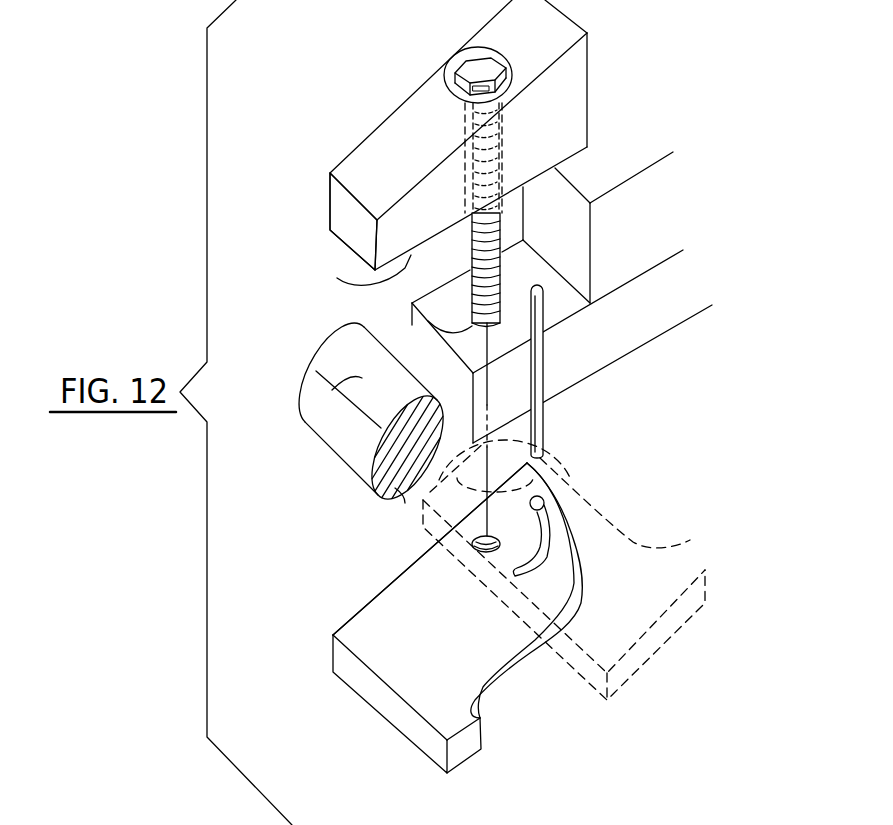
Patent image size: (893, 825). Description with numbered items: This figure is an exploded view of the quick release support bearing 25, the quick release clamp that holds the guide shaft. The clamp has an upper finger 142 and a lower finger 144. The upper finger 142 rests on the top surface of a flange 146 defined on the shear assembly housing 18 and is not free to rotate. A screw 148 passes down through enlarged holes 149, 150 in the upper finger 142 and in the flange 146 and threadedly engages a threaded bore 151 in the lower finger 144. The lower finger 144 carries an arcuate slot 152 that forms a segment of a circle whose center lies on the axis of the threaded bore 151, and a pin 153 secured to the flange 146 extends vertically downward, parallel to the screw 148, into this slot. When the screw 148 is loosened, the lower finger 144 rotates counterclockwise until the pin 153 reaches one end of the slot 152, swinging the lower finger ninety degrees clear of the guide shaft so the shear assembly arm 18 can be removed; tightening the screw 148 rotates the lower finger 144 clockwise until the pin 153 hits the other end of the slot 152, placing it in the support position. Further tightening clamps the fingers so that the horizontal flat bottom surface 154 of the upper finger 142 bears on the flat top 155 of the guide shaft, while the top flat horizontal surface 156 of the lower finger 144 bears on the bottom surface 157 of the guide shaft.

The shear assembly housing 18 is at (657, 247).
The quick release support bearing 25 is at (320, 158).
The upper finger 142 is at (573, 90).
The lower finger 144 is at (450, 663).
The flange 146 is at (560, 300).
The screw 148 is at (468, 137).
The enlarged hole 149 is at (505, 175).
The enlarged hole 150 is at (410, 316).
The threaded bore 151 is at (500, 545).
The arcuate slot 152 is at (573, 570).
The pin 153 is at (550, 446).
The horizontal flat bottom surface 154 is at (348, 274).
The flat top 155 is at (306, 418).
The top flat horizontal surface 156 is at (410, 583).
The bottom surface 157 is at (405, 490).